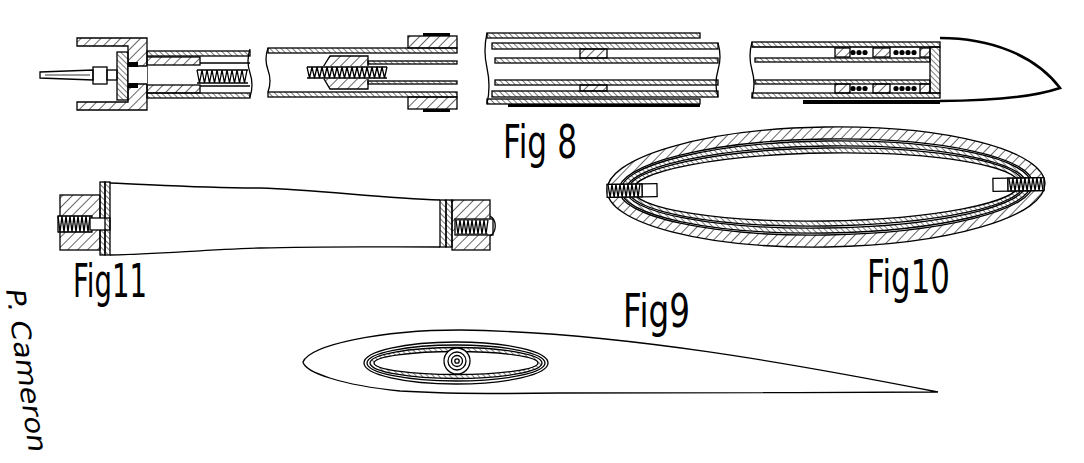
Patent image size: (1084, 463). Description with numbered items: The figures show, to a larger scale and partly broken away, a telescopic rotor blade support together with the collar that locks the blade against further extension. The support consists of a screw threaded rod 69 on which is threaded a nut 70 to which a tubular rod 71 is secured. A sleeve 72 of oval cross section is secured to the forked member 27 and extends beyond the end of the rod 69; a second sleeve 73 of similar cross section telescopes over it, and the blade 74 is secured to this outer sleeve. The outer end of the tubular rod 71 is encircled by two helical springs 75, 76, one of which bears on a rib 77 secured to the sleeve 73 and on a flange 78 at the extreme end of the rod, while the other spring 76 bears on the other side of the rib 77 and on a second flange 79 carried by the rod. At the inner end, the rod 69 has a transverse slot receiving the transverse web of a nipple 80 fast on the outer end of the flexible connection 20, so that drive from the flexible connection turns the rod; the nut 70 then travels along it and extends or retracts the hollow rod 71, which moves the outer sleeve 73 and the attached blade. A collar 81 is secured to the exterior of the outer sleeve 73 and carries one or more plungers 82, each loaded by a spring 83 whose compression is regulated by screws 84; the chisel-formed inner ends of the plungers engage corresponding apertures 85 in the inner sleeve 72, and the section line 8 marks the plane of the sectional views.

In FIG. 11, the section line 8 is at (485, 212).
In FIG. 8, the flexible connection 20 is at (58, 78).
In FIG. 8, the forked member 27 is at (117, 98).
In FIG. 8, the screw threaded rod 69 is at (221, 84).
In FIG. 9, the screw threaded rod 69 is at (448, 356).
In FIG. 8, the nut 70 is at (345, 90).
In FIG. 8, the tubular rod 71 is at (383, 86).
In FIG. 9, the tubular rod 71 is at (444, 361).
In FIG. 8, the sleeve 72 is at (290, 97).
In FIG. 10, the sleeve 72 is at (807, 225).
In FIG. 9, the sleeve 72 is at (500, 348).
In FIG. 10, the second sleeve 73 is at (665, 220).
In FIG. 9, the second sleeve 73 is at (456, 342).
In FIG. 9, the blade 74 is at (572, 336).
In FIG. 8, the helical spring 75 is at (915, 52).
In FIG. 8, the helical spring 76 is at (860, 52).
In FIG. 8, the rib 77 is at (883, 49).
In FIG. 8, the flange 78 is at (937, 46).
In FIG. 8, the second flange 79 is at (803, 42).
In FIG. 8, the nipple 80 is at (93, 70).
In FIG. 8, the collar 81 is at (438, 104).
In FIG. 10, the collar 81 is at (697, 155).
In FIG. 11, the collar 81 is at (65, 244).
In FIG. 10, the plunger 82 is at (657, 189).
In FIG. 11, the plunger 82 is at (110, 222).
In FIG. 10, the spring 83 is at (632, 182).
In FIG. 11, the spring 83 is at (76, 224).
In FIG. 10, the screw 84 is at (607, 188).
In FIG. 11, the screw 84 is at (60, 224).
In FIG. 11, the aperture 85 is at (106, 228).